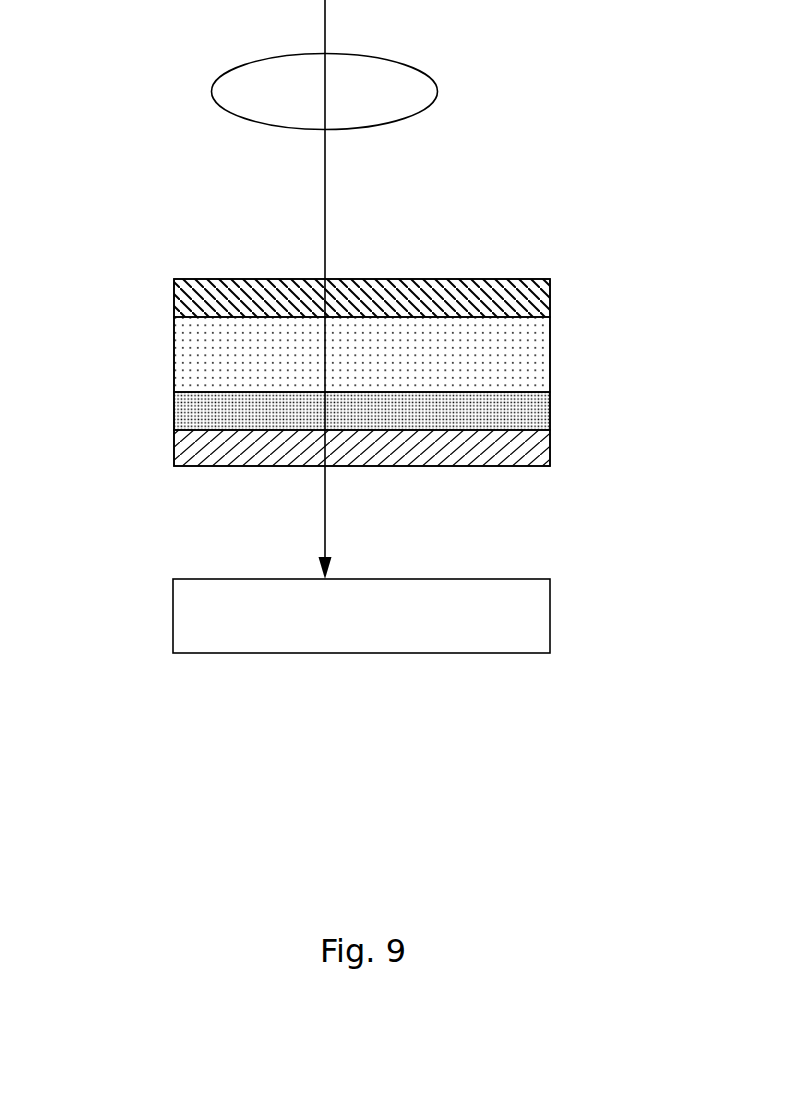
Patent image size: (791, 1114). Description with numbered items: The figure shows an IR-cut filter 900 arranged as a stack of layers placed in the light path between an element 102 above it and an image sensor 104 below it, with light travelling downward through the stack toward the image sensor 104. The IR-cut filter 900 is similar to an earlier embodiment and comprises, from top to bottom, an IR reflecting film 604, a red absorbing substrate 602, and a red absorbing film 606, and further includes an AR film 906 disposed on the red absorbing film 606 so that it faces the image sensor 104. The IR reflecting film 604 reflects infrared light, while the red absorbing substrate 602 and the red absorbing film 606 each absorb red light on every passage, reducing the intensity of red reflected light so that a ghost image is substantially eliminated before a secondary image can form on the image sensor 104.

The light source 102 is at (280, 104).
The image sensor 104 is at (232, 631).
The red absorbing substrate 602 is at (174, 355).
The IR reflecting film 604 is at (174, 295).
The red absorbing film 606 is at (174, 407).
The AR film 906 is at (174, 455).
The IR-cut filter 900 is at (566, 355).